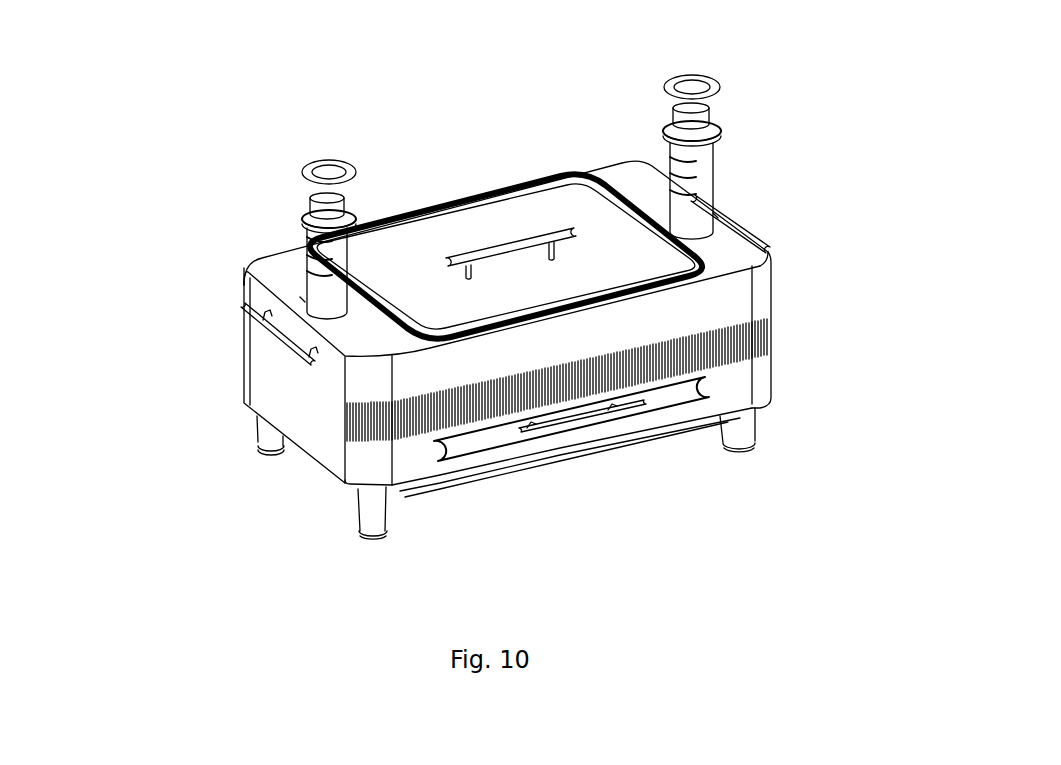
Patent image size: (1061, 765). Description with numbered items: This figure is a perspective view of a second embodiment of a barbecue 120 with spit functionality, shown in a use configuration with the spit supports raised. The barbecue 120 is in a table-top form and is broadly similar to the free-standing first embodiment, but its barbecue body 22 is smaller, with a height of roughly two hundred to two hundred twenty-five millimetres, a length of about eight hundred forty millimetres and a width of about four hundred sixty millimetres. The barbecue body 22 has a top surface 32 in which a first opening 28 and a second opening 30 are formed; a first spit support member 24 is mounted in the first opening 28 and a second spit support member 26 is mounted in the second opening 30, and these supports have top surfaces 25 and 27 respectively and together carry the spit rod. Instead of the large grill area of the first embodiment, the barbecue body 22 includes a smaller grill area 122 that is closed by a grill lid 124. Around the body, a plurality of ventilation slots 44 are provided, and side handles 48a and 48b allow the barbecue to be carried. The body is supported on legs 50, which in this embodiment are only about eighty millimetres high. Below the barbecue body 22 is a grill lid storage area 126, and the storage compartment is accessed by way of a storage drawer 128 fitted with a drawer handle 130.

The barbecue 120 is at (897, 114).
The barbecue body 22 is at (737, 300).
The first spit support member 24 is at (308, 257).
The top surface 25 is at (323, 203).
The second spit support member 26 is at (700, 173).
The top surface 27 is at (707, 113).
The first opening 28 is at (300, 297).
The second opening 30 is at (713, 213).
The top surface 32 is at (287, 385).
The ventilation slots 44 is at (770, 335).
The side handle 48a is at (265, 330).
The side handle 48b is at (757, 231).
The legs 50 is at (263, 430).
The grill area 122 is at (528, 188).
The grill lid 124 is at (427, 247).
The grill lid storage area 126 is at (653, 438).
The storage drawer 128 is at (493, 444).
The drawer handle 130 is at (590, 428).